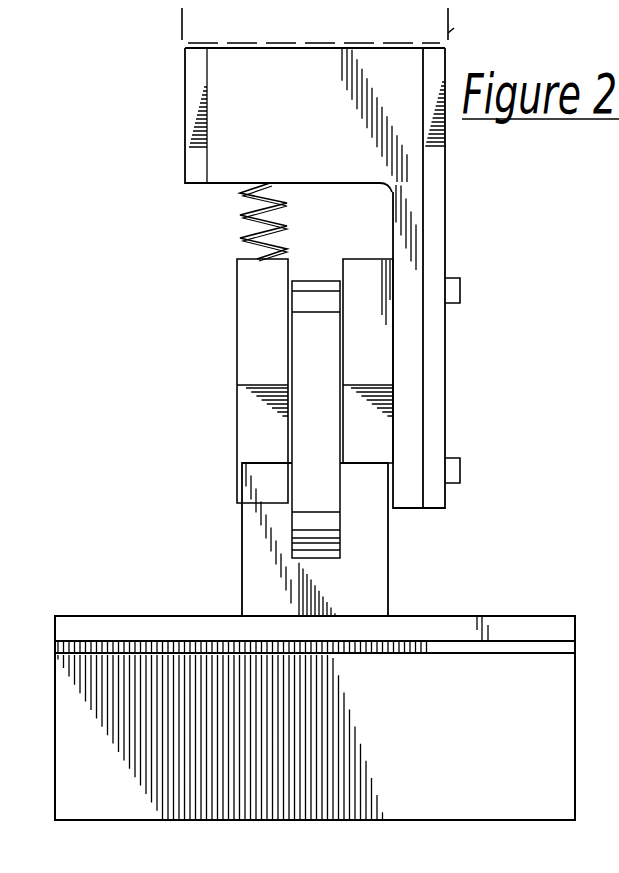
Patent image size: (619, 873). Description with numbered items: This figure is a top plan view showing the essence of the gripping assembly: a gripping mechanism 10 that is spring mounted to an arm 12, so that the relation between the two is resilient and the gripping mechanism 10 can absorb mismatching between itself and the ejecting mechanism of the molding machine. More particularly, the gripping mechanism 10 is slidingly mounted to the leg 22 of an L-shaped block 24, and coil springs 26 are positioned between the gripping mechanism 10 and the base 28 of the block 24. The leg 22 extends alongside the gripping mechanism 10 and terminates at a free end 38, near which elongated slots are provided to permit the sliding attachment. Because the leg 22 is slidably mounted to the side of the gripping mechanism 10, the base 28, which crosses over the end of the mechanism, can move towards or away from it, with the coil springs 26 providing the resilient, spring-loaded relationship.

The gripping mechanism 10 is at (241, 536).
The arm 12 is at (393, 24).
The leg 22 is at (405, 484).
The L-shaped block 24 is at (446, 216).
The coil springs 26 is at (241, 204).
The base 28 is at (324, 128).
The free end 38 is at (470, 359).